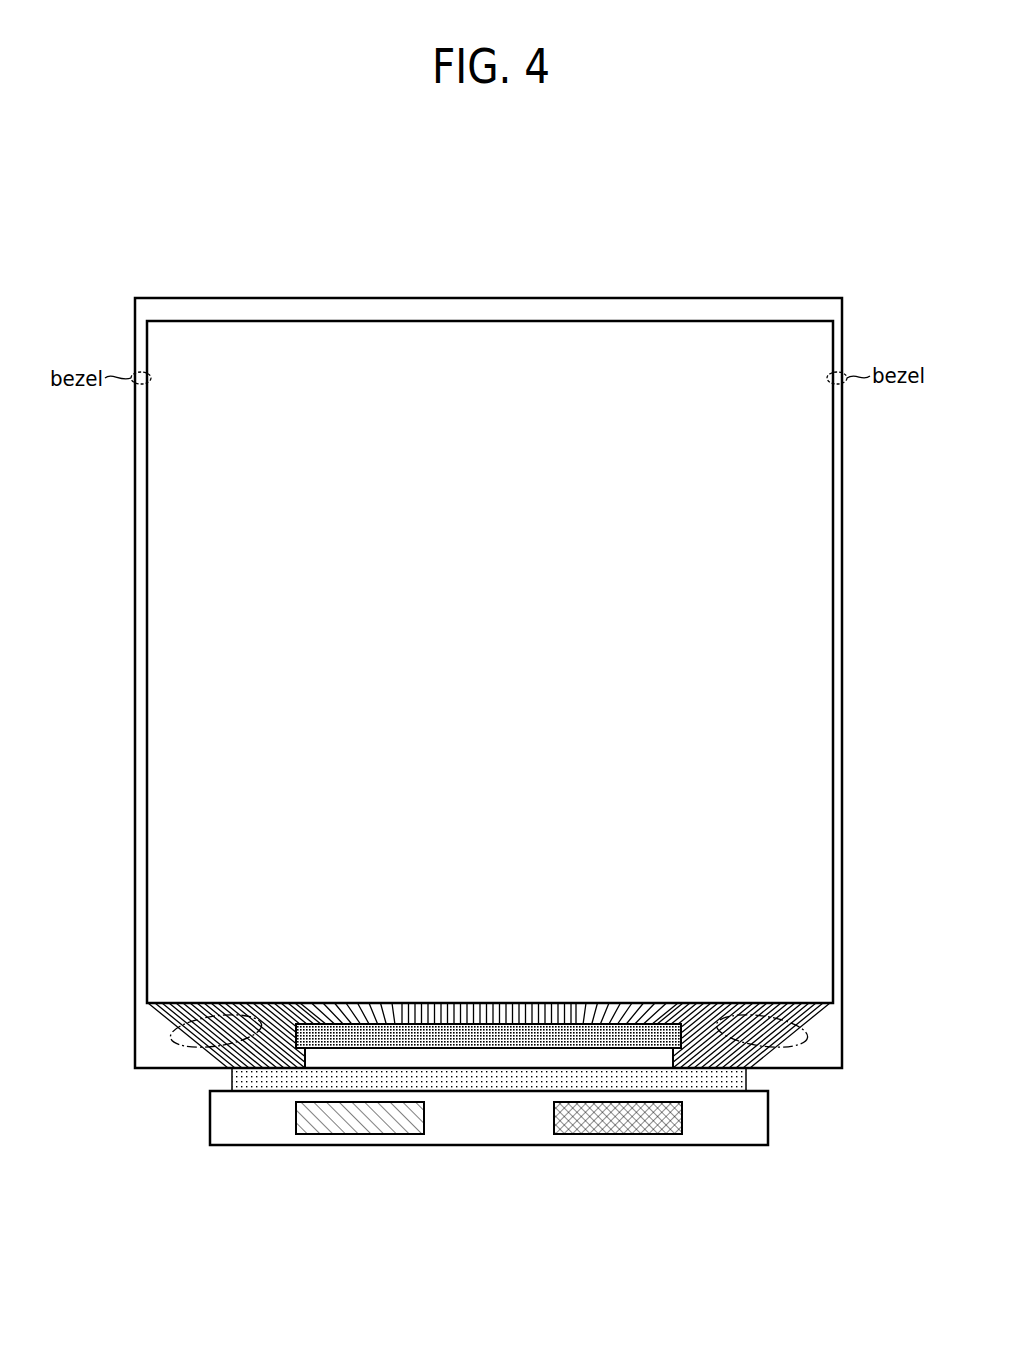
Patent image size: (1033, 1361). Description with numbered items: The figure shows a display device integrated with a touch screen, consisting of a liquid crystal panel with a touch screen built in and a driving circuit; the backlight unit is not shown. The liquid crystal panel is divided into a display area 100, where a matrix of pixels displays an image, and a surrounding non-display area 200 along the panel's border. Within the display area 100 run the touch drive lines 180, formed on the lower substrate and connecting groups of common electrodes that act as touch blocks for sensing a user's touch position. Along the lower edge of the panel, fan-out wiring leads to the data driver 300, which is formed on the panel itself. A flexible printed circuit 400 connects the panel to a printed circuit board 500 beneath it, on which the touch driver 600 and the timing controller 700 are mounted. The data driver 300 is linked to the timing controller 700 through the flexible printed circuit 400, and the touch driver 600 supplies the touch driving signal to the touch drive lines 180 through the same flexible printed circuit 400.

The display area 100 is at (441, 332).
The non-display area 200 is at (600, 312).
The touch drive line 180 is at (171, 1031).
The data driver 300 is at (520, 1037).
The flexible printed circuit 400 is at (248, 1080).
The main circuit board 500 is at (453, 1148).
The touch driver 600 is at (351, 1122).
The timing controller 700 is at (606, 1120).